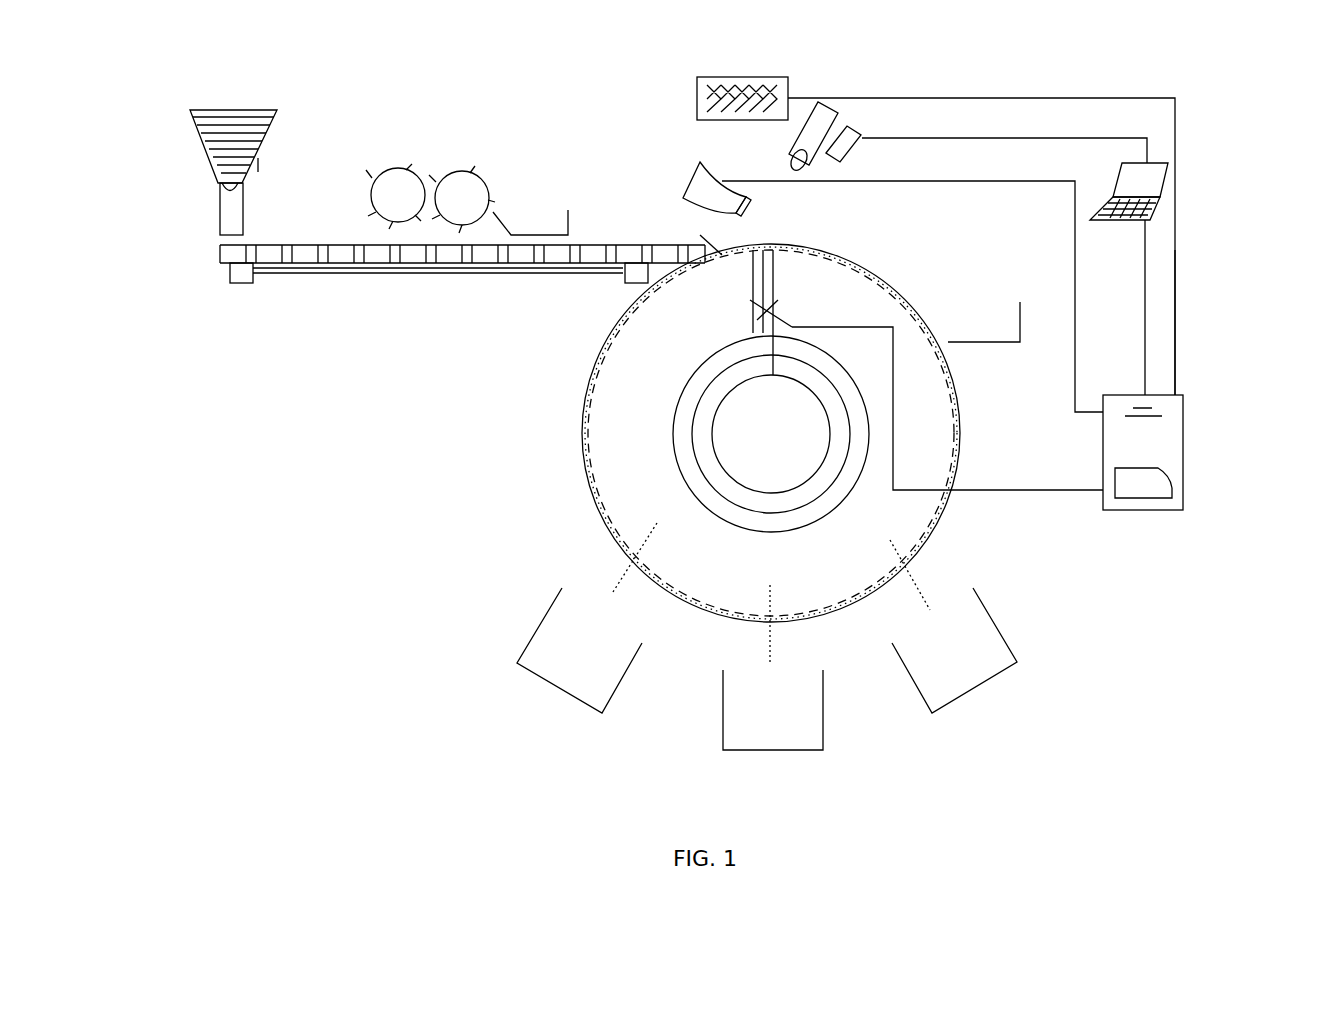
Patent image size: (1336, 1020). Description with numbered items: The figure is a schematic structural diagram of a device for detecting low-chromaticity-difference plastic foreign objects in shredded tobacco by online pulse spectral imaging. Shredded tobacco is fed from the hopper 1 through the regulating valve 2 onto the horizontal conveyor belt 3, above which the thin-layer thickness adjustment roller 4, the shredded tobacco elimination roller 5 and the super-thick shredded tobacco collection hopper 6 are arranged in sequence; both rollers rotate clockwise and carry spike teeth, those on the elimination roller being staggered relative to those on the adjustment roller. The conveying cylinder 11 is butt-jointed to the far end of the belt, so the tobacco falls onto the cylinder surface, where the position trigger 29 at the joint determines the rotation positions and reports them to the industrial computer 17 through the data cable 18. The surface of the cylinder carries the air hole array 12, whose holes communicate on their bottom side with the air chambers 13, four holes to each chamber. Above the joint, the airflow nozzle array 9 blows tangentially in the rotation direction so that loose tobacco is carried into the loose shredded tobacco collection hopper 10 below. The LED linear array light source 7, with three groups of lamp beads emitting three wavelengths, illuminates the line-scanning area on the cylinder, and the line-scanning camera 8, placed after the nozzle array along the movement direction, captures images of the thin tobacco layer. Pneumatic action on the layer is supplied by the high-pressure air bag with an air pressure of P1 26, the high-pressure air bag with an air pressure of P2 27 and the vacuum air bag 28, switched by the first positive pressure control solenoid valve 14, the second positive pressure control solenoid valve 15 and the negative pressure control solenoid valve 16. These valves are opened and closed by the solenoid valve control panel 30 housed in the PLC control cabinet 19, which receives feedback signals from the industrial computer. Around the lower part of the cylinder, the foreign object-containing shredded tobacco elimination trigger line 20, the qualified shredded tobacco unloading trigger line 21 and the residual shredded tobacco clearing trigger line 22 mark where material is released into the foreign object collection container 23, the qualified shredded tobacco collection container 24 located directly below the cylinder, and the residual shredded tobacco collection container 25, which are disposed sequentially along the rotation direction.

The hopper 1 is at (205, 150).
The regulating valve 2 is at (262, 163).
The horizontal conveyor belt 3 is at (215, 258).
The thin-layer thickness adjustment roller 4 is at (408, 166).
The shredded tobacco elimination roller 5 is at (485, 172).
The super-thick shredded tobacco collection hopper 6 is at (568, 210).
The LED linear array light source 7 is at (697, 98).
The line-scanning camera 8 is at (833, 113).
The airflow nozzle array 9 is at (745, 205).
The loose shredded tobacco collection hopper 10 is at (985, 342).
The conveying cylinder 11 is at (618, 313).
The air hole array 12 is at (588, 385).
The air chamber 13 is at (588, 452).
The first positive pressure control solenoid valve 14 is at (752, 308).
The second positive pressure control solenoid valve 15 is at (752, 300).
The negative pressure control solenoid valve 16 is at (775, 308).
The industrial computer 17 is at (1163, 183).
The data cable 18 is at (1175, 285).
The PLC control cabinet 19 is at (1183, 438).
The foreign object-containing shredded tobacco elimination trigger line 20 is at (912, 575).
The qualified shredded tobacco unloading trigger line 21 is at (740, 630).
The residual shredded tobacco clearing trigger line 22 is at (618, 566).
The foreign object collection container 23 is at (1000, 636).
The qualified shredded tobacco collection container 24 is at (823, 720).
The residual shredded tobacco collection container 25 is at (517, 650).
The high-pressure air bag with an air pressure of P1 26 is at (683, 417).
The high-pressure air bag with an air pressure of P2 27 is at (703, 462).
The vacuum air bag 28 is at (752, 477).
The position trigger 29 is at (700, 235).
The solenoid valve control panel 30 is at (1172, 488).